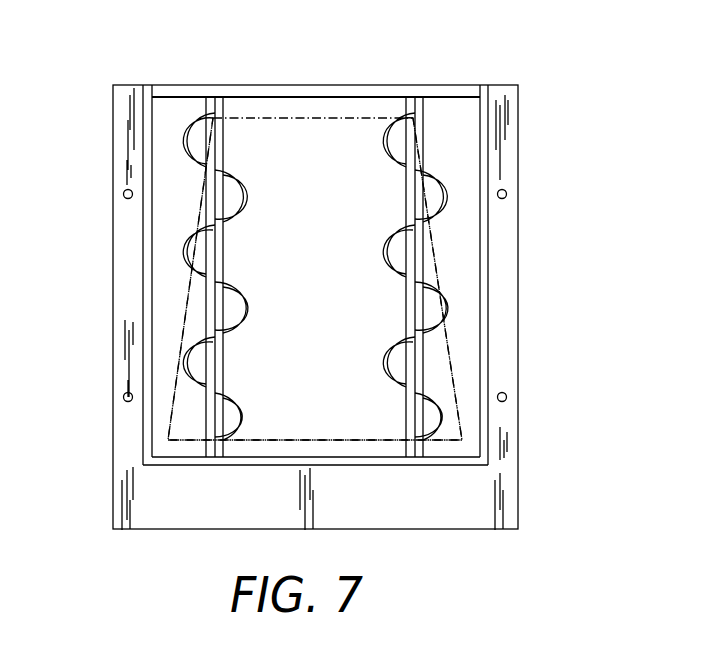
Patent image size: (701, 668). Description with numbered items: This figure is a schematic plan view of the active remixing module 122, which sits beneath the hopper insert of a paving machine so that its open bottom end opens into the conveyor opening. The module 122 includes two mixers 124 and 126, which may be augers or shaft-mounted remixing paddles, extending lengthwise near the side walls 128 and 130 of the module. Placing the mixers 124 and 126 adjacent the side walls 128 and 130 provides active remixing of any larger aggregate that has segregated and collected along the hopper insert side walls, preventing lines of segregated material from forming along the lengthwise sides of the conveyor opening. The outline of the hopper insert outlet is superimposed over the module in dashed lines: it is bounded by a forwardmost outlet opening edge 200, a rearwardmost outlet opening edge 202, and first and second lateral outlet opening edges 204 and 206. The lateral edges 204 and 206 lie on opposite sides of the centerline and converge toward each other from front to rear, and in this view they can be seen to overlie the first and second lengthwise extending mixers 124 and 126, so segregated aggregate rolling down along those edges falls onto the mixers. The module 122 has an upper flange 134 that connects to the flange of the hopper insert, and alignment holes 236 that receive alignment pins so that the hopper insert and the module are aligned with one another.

The active remixing module 122 is at (569, 130).
The first lengthwise extending mixer 124 is at (413, 306).
The second lengthwise extending mixer 126 is at (197, 370).
The side wall 128 is at (484, 228).
The side wall 130 is at (150, 234).
The upper flange 134 is at (496, 466).
The alignment holes 236 is at (124, 193).
The forwardmost outlet opening edge 200 is at (304, 438).
The rearwardmost outlet opening edge 202 is at (263, 118).
The first lateral outlet opening edge 204 is at (438, 354).
The second lateral outlet opening edge 206 is at (199, 295).